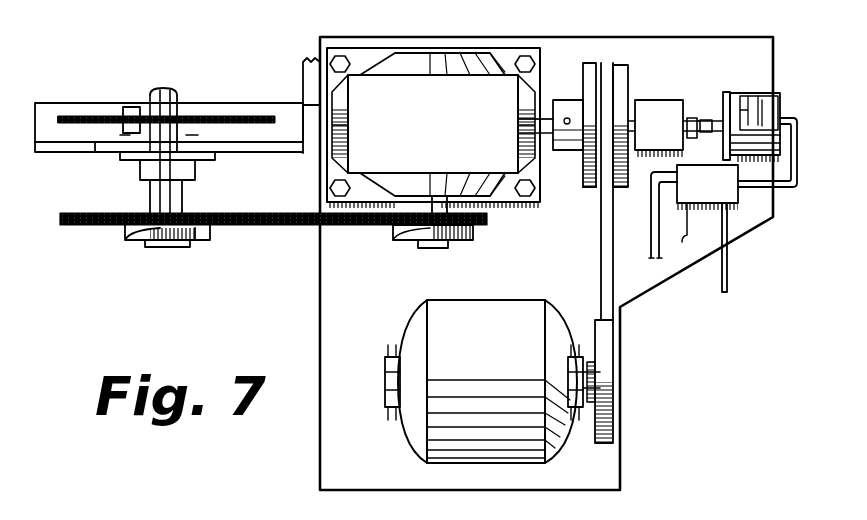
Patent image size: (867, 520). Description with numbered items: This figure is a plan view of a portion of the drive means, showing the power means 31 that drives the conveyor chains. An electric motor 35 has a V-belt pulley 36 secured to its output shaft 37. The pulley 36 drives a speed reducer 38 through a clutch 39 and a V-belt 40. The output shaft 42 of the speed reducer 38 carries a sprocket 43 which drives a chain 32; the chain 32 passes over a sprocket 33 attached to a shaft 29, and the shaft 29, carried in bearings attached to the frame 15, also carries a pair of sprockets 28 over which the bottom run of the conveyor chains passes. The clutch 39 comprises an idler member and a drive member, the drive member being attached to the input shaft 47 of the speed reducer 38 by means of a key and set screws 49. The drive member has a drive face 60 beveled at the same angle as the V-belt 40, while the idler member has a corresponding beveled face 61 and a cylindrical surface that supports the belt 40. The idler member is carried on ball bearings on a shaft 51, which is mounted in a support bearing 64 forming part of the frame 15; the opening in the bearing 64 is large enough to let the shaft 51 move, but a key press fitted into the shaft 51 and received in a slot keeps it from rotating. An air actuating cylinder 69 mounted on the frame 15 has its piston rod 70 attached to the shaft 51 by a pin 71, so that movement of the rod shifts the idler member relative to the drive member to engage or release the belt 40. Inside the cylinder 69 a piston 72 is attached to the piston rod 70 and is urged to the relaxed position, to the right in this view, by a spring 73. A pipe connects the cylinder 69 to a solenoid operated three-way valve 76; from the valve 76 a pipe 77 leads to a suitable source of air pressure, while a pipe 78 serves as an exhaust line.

The frame 15 is at (786, 190).
The sprockets 28 is at (222, 112).
The shaft 29 is at (177, 92).
The power means 31 is at (390, 425).
The chain 32 is at (263, 226).
The sprocket 33 is at (134, 242).
The electric motor 35 is at (487, 381).
The V-belt pulley 36 is at (614, 402).
The output shaft 37 is at (600, 380).
The speed reducer 38 is at (440, 130).
The clutch 39 is at (589, 60).
The V-belt 40 is at (600, 270).
The output shaft 42 is at (432, 248).
The sprocket 43 is at (462, 241).
The input shaft 47 is at (546, 150).
The set screws 49 is at (567, 118).
The shaft 51 is at (706, 119).
The drive face 60 is at (590, 189).
The beveled face 61 is at (622, 64).
The support bearing 64 is at (675, 128).
The air actuating cylinder 69 is at (734, 90).
The piston rod 70 is at (693, 138).
The pin 71 is at (690, 117).
The piston 72 is at (775, 108).
The spring 73 is at (750, 95).
The solenoid operated 3-way valve 76 is at (707, 187).
The pipe 77 is at (730, 273).
The pipe 78 is at (670, 223).